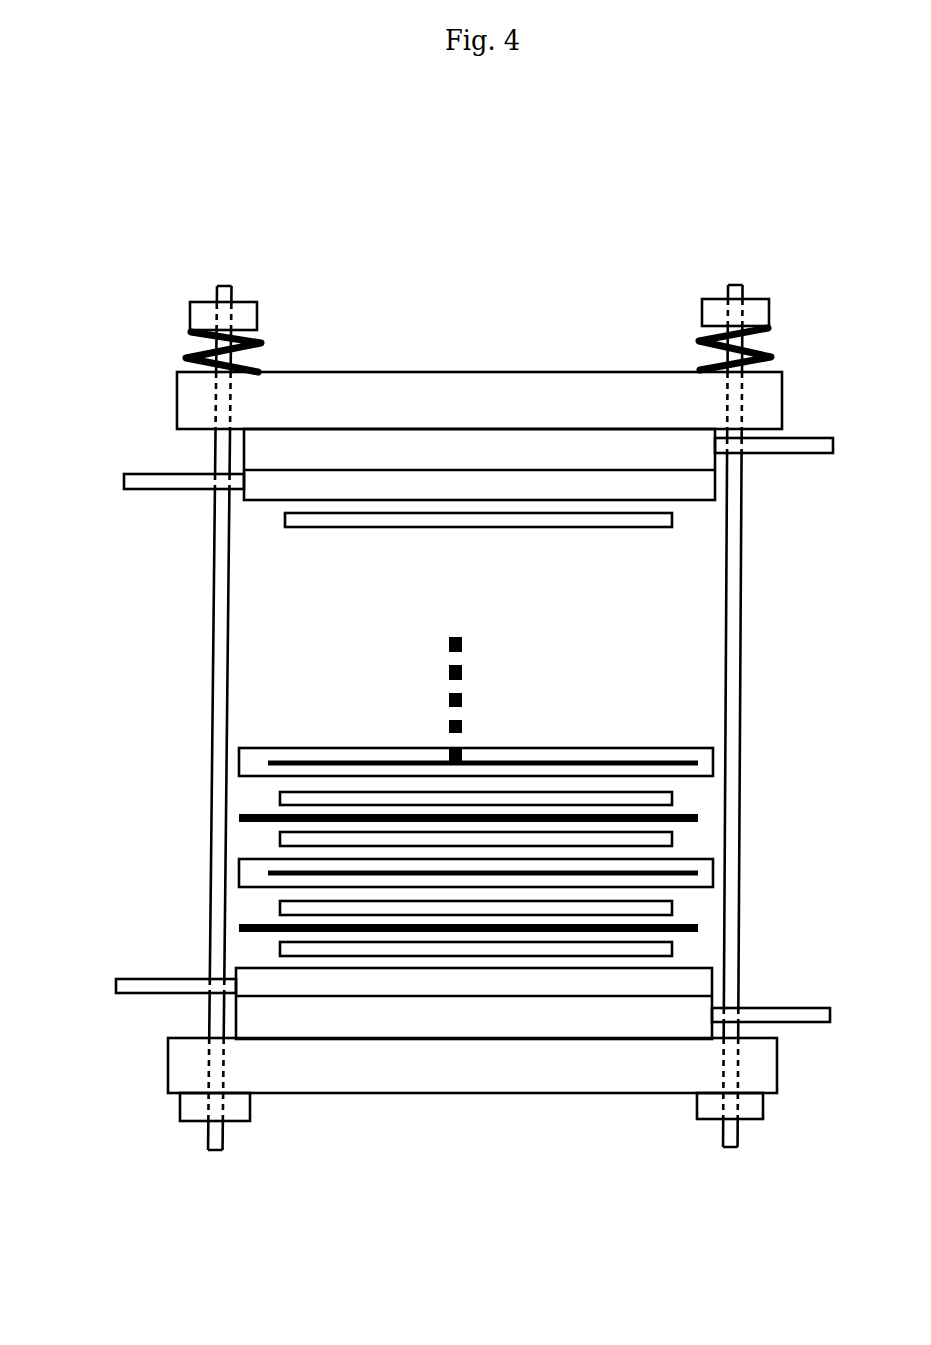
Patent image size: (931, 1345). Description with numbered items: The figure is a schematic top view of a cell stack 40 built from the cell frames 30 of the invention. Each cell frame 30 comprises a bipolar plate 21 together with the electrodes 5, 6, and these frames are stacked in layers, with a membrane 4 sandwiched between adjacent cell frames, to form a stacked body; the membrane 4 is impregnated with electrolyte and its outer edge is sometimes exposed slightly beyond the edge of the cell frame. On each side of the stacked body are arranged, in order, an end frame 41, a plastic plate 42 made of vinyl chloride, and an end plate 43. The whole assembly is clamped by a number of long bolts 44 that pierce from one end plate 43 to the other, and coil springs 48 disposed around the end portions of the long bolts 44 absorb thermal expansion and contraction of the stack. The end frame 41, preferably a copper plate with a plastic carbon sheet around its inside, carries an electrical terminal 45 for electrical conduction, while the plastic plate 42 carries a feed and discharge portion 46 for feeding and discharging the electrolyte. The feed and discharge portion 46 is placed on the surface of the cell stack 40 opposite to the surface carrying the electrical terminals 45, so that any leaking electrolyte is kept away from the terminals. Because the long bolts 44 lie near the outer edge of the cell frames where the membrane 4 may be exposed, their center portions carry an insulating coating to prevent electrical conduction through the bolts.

The membrane 4 is at (240, 820).
The electrode 5 is at (657, 798).
The electrode 6 is at (657, 840).
The bipolar plate 21 is at (698, 872).
The cell frame 30 is at (205, 873).
The cell stack 40 is at (199, 680).
The end frame 41 is at (272, 485).
The plastic plate 42 is at (687, 453).
The end plate 43 is at (177, 408).
The long bolt 44 is at (210, 1133).
The electrical terminal 45 is at (116, 986).
The feed and discharge portion 46 is at (815, 1023).
The coil spring 48 is at (190, 358).